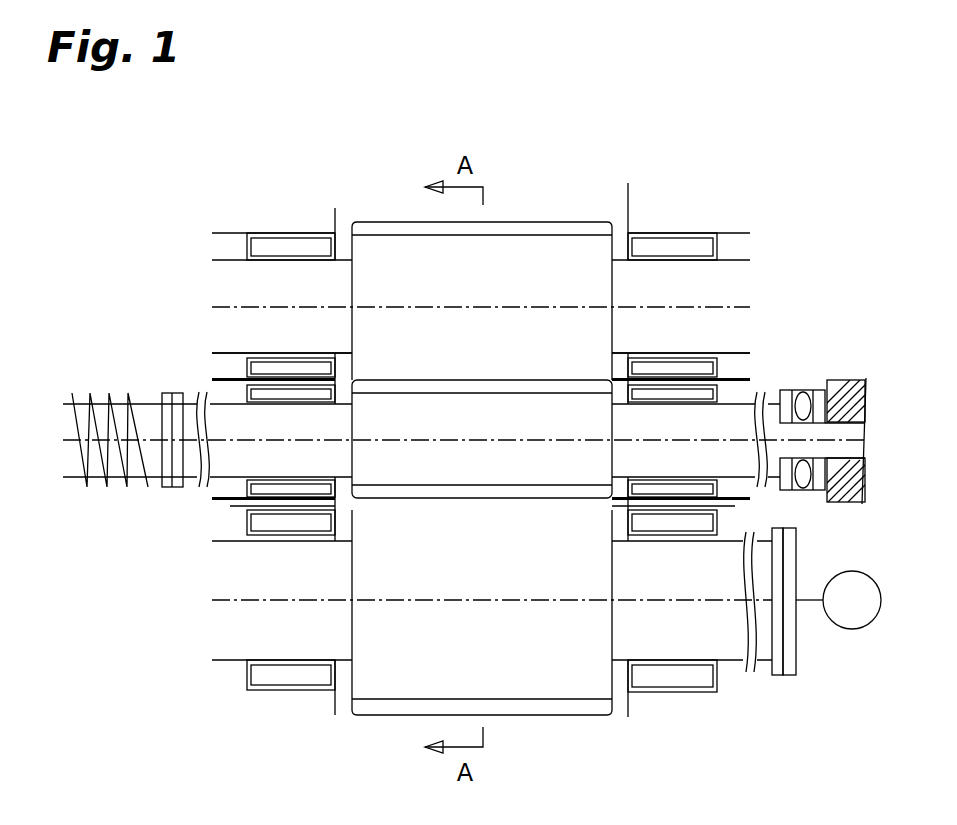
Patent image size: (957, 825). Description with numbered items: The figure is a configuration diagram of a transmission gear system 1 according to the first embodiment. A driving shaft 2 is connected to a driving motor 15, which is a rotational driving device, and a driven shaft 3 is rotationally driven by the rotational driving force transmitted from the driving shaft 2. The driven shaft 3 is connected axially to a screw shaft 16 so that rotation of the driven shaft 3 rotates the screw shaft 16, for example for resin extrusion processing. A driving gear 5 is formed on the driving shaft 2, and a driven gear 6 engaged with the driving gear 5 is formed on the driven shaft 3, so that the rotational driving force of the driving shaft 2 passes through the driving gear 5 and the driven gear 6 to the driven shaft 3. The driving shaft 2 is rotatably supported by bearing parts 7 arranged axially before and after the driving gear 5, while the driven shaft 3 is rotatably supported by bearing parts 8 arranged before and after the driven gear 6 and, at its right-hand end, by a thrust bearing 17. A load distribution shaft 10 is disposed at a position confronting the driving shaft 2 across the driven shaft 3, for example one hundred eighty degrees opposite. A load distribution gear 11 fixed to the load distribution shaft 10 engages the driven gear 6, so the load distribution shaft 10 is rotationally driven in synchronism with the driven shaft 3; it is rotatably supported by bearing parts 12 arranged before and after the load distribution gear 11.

The transmission gear system 1 is at (678, 158).
The driving shaft 2 is at (252, 633).
The driven shaft 3 is at (240, 457).
The driving gear 5 is at (549, 716).
The driven gear 6 is at (545, 380).
The bearing parts 7 is at (288, 677).
The bearing parts 8 is at (258, 487).
The load distribution shaft 10 is at (240, 296).
The load distribution gear 11 is at (383, 222).
The bearing parts 12 is at (290, 245).
The driving motor 15 is at (851, 630).
The screw shaft 16 is at (107, 393).
The thrust bearing 17 is at (788, 390).